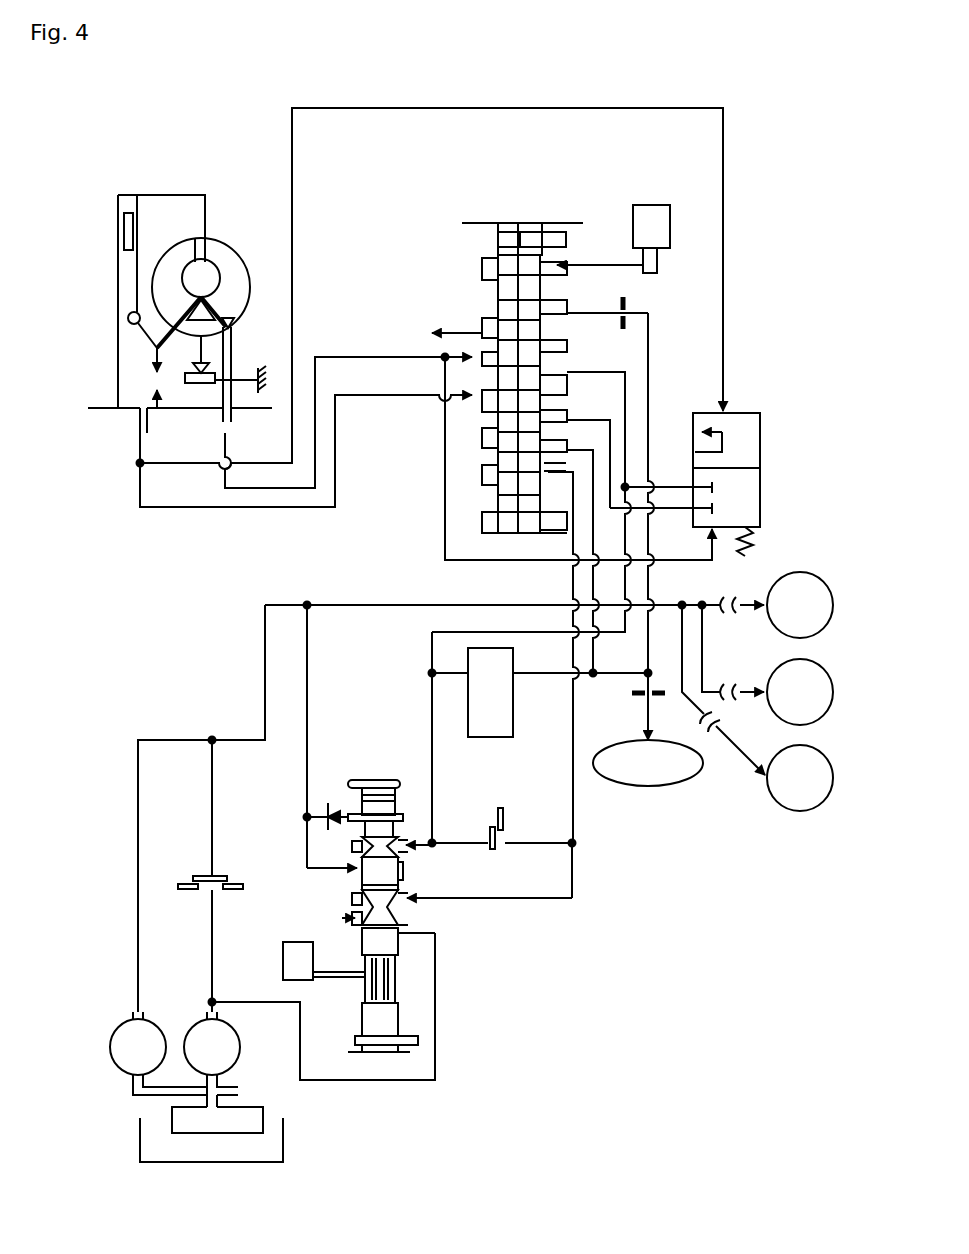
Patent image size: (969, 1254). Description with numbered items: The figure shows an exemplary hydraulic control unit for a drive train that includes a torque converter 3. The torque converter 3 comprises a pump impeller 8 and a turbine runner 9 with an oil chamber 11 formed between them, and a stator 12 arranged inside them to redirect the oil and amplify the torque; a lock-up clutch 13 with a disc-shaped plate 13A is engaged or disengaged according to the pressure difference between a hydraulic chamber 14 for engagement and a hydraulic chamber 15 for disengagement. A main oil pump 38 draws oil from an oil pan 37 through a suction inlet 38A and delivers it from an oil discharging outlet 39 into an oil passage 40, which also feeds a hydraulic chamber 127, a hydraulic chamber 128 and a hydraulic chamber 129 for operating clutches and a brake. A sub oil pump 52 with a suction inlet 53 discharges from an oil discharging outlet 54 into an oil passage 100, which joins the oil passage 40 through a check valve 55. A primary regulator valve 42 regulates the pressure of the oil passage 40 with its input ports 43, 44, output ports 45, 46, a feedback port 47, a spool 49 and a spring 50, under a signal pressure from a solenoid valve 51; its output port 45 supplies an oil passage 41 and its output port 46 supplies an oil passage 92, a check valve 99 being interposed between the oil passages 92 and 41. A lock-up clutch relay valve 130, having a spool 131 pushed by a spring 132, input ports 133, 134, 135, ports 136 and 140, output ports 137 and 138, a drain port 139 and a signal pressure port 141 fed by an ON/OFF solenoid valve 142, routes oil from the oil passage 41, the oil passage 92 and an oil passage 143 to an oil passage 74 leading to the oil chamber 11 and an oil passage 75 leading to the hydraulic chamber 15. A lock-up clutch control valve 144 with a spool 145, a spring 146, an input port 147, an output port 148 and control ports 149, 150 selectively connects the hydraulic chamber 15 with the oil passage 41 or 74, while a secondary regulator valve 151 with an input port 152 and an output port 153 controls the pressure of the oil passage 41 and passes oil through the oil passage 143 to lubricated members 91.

The torque converter 3 is at (201, 180).
The pump impeller 8 is at (222, 260).
The turbine runner 9 is at (183, 250).
The oil chamber 11 is at (207, 278).
The stator 12 is at (207, 318).
The lock-up clutch 13 is at (124, 232).
The plate 13A is at (124, 298).
The hydraulic chamber 14 is at (143, 253).
The hydraulic chamber 15 is at (126, 282).
The oil pan 37 is at (283, 1142).
The main oil pump 38 is at (130, 1048).
The suction inlet 38A is at (135, 1090).
The oil discharging outlet 39 is at (135, 1015).
The oil passage 40 is at (138, 806).
The oil passage 41 is at (428, 712).
The primary regulator valve 42 is at (342, 918).
The input port 43 is at (357, 862).
The input port 44 is at (405, 925).
The output port 45 is at (400, 845).
The output port 46 is at (404, 902).
The feedback port 47 is at (360, 815).
The spool 49 is at (375, 950).
The spring 50 is at (367, 990).
The solenoid valve 51 is at (292, 965).
The sub oil pump 52 is at (225, 1042).
The suction inlet 53 is at (213, 1082).
The oil discharging outlet 54 is at (210, 1015).
The check valve 55 is at (234, 881).
The oil passage 74 is at (340, 357).
The oil passage 75 is at (140, 490).
The lubricated members 91 is at (655, 778).
The oil passage 92 is at (576, 888).
The check valve 99 is at (505, 822).
The oil passage 100 is at (405, 1080).
The hydraulic chamber 127 is at (808, 590).
The hydraulic chamber 128 is at (815, 678).
The hydraulic chamber 129 is at (812, 770).
The lock-up clutch relay valve 130 is at (514, 504).
The spool 131 is at (496, 290).
The spring 132 is at (510, 522).
The input port 133 is at (547, 313).
The input port 134 is at (547, 375).
The input port 135 is at (548, 480).
The port 136 is at (488, 357).
The output port 137 is at (560, 412).
The output port 138 is at (555, 452).
The drain port 139 is at (482, 326).
The port 140 is at (485, 395).
The signal pressure port 141 is at (555, 265).
The ON/OFF solenoid valve 142 is at (655, 225).
The oil passage 143 is at (650, 340).
The lock-up clutch control valve 144 is at (766, 447).
The spool 145 is at (742, 427).
The spring 146 is at (748, 541).
The input port 147 is at (673, 510).
The output port 148 is at (678, 487).
The control port 149 is at (714, 535).
The control port 150 is at (726, 410).
The secondary regulator valve 151 is at (490, 707).
The input port 152 is at (466, 675).
The output port 153 is at (515, 668).